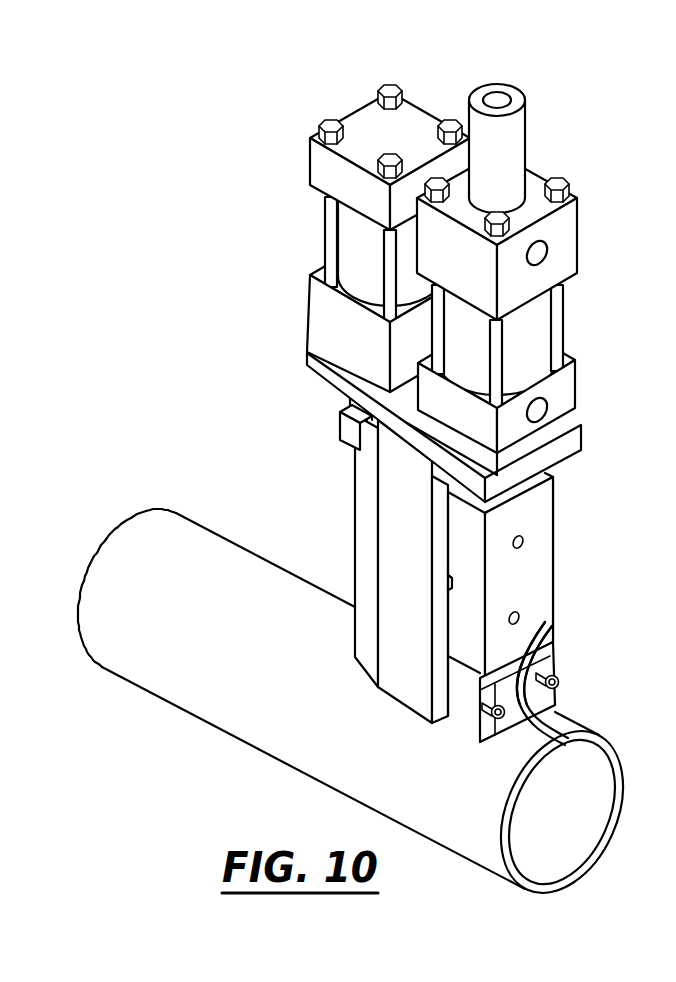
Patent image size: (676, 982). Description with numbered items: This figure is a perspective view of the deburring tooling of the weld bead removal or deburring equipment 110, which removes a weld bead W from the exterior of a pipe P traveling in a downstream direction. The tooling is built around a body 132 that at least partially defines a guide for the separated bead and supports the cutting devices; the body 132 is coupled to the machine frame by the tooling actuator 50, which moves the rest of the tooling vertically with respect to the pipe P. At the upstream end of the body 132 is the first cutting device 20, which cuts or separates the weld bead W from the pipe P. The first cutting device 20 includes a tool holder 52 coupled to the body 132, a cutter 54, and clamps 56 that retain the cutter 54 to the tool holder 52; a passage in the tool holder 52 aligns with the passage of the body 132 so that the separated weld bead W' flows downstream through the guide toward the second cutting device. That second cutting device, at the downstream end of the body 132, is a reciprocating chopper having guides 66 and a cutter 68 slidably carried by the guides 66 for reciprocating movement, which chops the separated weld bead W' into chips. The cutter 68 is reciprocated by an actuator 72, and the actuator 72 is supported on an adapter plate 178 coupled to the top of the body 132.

The deburring equipment 110 is at (278, 110).
The actuator 72 is at (393, 60).
The tooling actuator 50 is at (601, 164).
The adapter plate 178 is at (560, 430).
The cutter 68 is at (337, 432).
The guides 66 is at (355, 540).
The body 132 is at (425, 603).
The tool holder 52 is at (540, 505).
The first cutting device 20 is at (578, 542).
The separated weld bead W' is at (571, 653).
The clamps 56 is at (560, 683).
The weld bead W is at (580, 683).
The cutter 54 is at (493, 732).
The pipe P is at (160, 660).